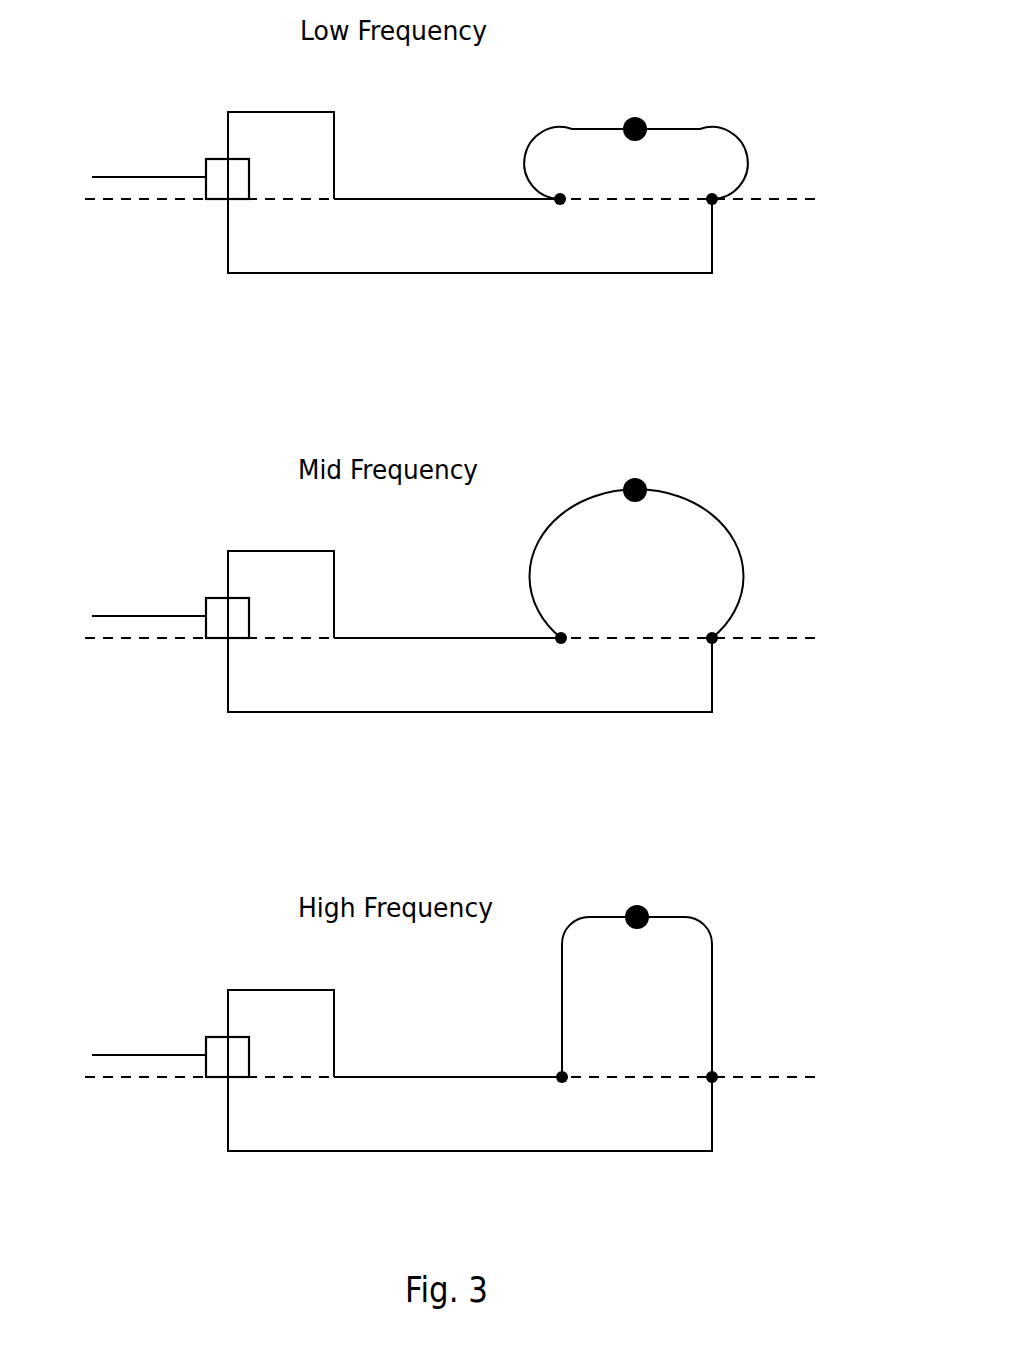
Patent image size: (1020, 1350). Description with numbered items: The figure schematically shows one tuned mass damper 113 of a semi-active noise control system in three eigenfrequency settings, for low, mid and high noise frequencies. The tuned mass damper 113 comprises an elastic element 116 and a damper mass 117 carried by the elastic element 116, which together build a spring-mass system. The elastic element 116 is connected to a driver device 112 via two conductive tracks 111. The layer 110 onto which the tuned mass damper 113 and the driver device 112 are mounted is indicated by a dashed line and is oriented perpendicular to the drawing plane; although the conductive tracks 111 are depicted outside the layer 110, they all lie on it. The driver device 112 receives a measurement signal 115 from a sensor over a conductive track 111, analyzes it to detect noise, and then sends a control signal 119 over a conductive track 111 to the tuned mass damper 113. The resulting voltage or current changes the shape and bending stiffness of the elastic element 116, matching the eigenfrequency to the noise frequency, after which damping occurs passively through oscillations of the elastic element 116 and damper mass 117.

The layer 110 is at (767, 207).
The conductive tracks 111 is at (428, 279).
The driver device 112 is at (212, 154).
The tuned mass damper 113 is at (709, 555).
The measurement signal 115 is at (182, 182).
The elastic element 116 is at (707, 126).
The damper mass 117 is at (632, 114).
The control signal 119 is at (398, 192).